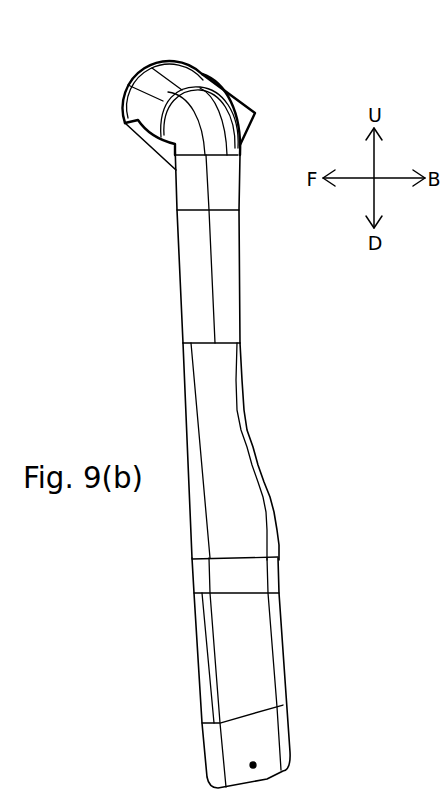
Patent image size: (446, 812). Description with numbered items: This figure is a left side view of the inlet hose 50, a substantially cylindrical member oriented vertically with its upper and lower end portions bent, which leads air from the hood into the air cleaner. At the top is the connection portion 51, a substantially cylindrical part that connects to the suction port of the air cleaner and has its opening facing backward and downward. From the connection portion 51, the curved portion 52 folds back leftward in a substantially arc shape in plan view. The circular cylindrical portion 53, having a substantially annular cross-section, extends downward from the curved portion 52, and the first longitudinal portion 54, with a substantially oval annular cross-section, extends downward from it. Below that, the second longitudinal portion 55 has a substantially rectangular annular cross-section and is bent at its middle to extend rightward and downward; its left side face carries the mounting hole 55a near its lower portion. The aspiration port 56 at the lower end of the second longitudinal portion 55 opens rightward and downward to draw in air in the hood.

The inlet hose 50 is at (214, 413).
The connection portion 51 is at (235, 108).
The curved portion 52 is at (137, 105).
The circular cylindrical portion 53 is at (188, 199).
The first longitudinal portion 54 is at (195, 385).
The second longitudinal portion 55 is at (202, 664).
The mounting hole 55a is at (252, 764).
The aspiration port 56 is at (272, 777).